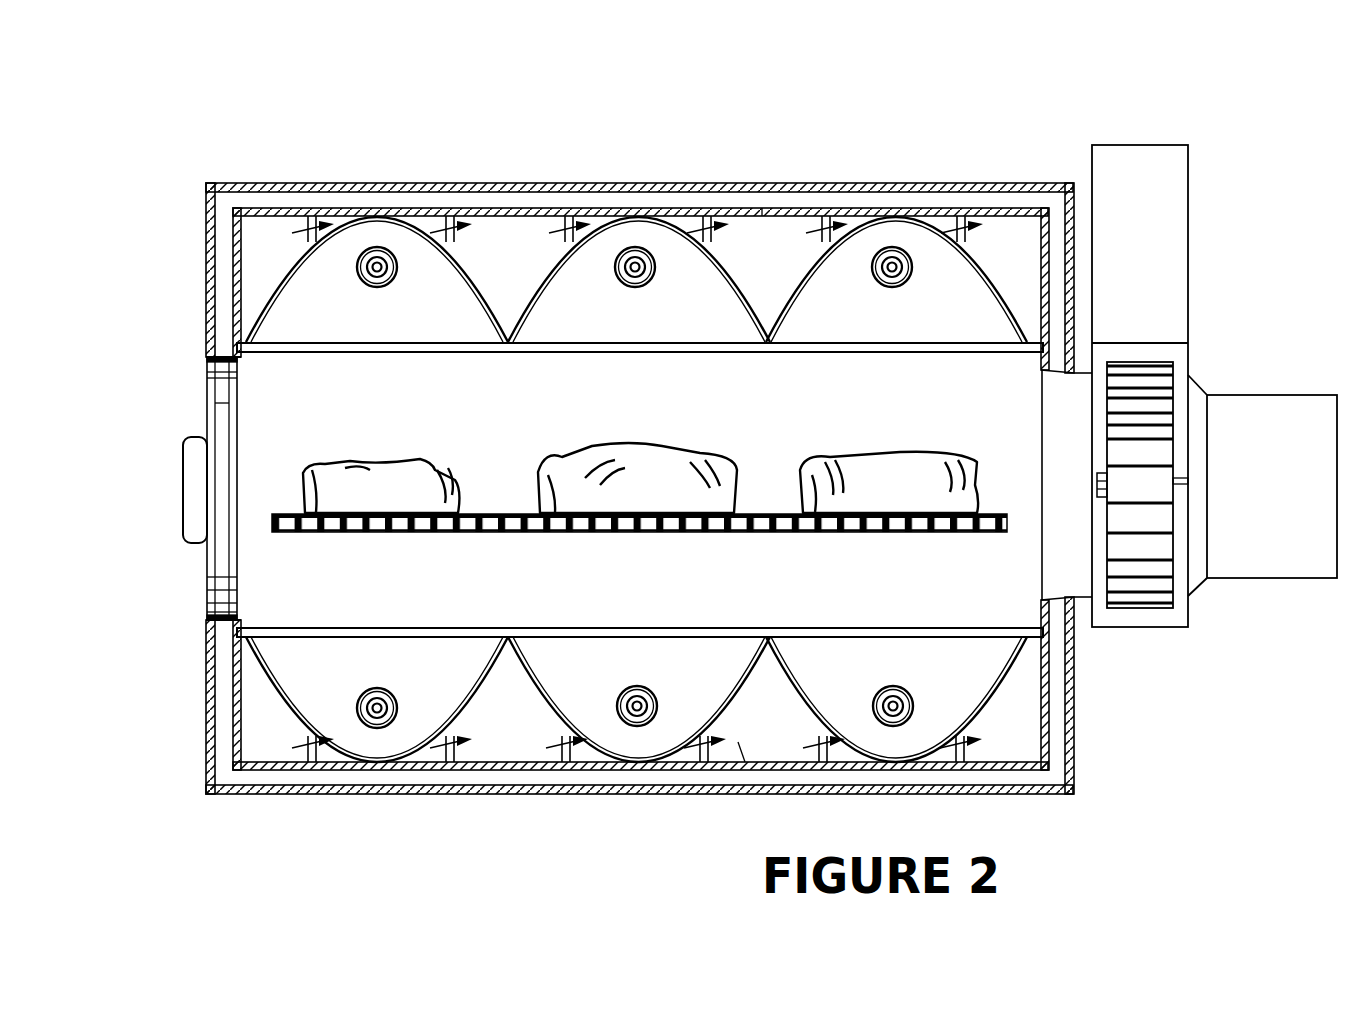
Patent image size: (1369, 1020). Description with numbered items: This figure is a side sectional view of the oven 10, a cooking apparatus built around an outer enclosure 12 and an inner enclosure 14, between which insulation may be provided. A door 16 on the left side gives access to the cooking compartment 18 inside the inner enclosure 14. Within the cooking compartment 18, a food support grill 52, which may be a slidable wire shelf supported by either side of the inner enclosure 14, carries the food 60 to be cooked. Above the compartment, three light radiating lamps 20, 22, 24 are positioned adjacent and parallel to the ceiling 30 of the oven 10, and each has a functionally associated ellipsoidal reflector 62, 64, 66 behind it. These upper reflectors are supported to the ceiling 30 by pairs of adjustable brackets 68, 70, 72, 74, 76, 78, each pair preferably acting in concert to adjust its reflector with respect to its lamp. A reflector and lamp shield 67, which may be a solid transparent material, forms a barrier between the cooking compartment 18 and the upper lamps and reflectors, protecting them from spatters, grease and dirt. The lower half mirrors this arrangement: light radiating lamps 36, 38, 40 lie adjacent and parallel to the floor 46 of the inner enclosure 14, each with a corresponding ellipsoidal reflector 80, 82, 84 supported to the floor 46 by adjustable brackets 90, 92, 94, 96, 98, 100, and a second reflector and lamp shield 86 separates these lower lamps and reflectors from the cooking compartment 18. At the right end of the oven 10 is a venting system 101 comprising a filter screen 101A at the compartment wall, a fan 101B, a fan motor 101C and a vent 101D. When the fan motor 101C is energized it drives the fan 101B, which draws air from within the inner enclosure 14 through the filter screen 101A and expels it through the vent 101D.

The oven 10 is at (800, 115).
The outer enclosure 12 is at (455, 183).
The inner enclosure 14 is at (297, 208).
The door 16 is at (220, 402).
The cooking compartment 18 is at (838, 409).
The light radiating lamp 20 is at (377, 247).
The light radiating lamp 22 is at (635, 247).
The light radiating lamp 24 is at (892, 247).
The ceiling 30 is at (705, 183).
The light radiating lamp 36 is at (377, 728).
The light radiating lamp 38 is at (637, 726).
The light radiating lamp 40 is at (893, 726).
The floor 46 is at (770, 757).
The food support grill 52 is at (697, 530).
The food 60 is at (400, 468).
The ellipsoidal reflector 62 is at (293, 277).
The ellipsoidal reflector 64 is at (548, 272).
The ellipsoidal reflector 66 is at (812, 270).
The reflector and lamp shield 67 is at (455, 352).
The adjustable bracket 68 is at (307, 240).
The adjustable bracket 70 is at (465, 232).
The adjustable bracket 72 is at (533, 208).
The adjustable bracket 74 is at (762, 208).
The adjustable bracket 76 is at (796, 208).
The adjustable bracket 78 is at (985, 215).
The ellipsoidal reflector 80 is at (455, 700).
The ellipsoidal reflector 82 is at (717, 707).
The ellipsoidal reflector 84 is at (1000, 672).
The reflector and lamp shield 86 is at (372, 628).
The adjustable bracket 90 is at (300, 760).
The adjustable bracket 92 is at (455, 760).
The adjustable bracket 94 is at (570, 750).
The adjustable bracket 96 is at (738, 742).
The adjustable bracket 98 is at (825, 750).
The adjustable bracket 100 is at (1000, 765).
The venting system 101 is at (1242, 248).
The filter screen 101A is at (1065, 540).
The fan 101B is at (1148, 600).
The fan motor 101C is at (1270, 570).
The vent 101D is at (1172, 170).